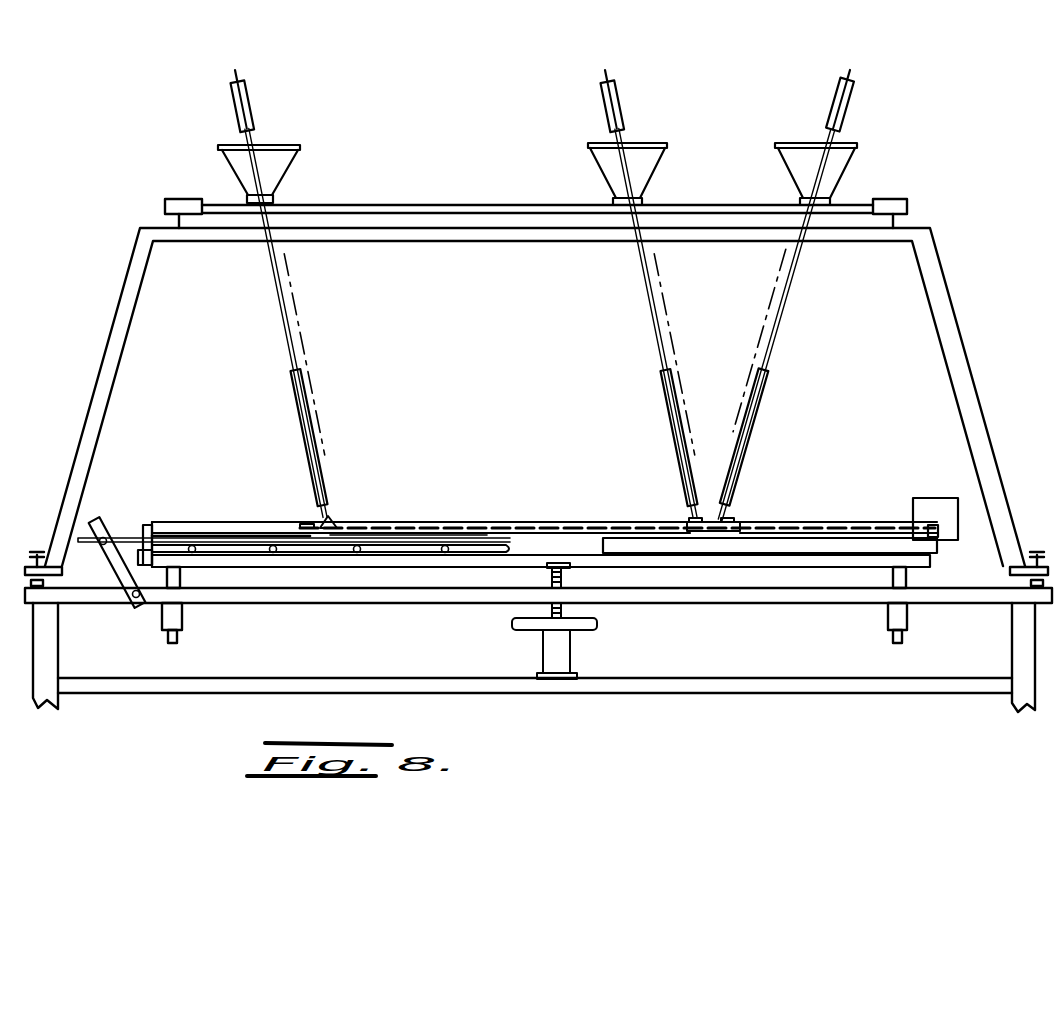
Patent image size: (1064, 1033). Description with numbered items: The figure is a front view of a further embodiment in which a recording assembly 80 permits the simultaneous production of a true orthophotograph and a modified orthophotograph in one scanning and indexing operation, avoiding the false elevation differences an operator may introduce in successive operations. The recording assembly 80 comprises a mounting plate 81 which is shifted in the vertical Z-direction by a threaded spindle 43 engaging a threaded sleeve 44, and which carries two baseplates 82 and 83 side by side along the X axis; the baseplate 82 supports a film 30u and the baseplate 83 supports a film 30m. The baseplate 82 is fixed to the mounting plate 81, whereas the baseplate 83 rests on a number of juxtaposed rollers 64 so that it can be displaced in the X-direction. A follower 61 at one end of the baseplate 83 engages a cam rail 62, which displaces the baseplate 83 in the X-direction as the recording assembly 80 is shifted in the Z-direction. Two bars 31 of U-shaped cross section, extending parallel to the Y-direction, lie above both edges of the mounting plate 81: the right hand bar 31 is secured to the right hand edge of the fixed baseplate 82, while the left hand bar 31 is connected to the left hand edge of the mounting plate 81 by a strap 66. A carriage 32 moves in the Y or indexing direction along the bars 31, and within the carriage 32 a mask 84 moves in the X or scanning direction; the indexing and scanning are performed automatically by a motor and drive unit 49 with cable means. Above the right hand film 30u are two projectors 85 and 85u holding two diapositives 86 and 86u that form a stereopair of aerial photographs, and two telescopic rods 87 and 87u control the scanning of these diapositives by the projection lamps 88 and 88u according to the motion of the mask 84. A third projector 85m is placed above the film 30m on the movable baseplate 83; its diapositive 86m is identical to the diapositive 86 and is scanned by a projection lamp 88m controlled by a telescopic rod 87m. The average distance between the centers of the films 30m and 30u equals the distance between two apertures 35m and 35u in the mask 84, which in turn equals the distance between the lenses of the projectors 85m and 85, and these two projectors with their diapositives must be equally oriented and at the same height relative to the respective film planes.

The film 30m is at (200, 536).
The film 30u is at (815, 532).
The bar 31 is at (170, 522).
The carriage 32 is at (240, 522).
The aperture 35m is at (325, 516).
The aperture 35u is at (722, 520).
The threaded spindle 43 is at (548, 607).
The threaded sleeve 44 is at (548, 660).
The motor and drive unit 49 is at (930, 498).
The follower 61 is at (88, 536).
The cam rail 62 is at (90, 520).
The rollers 64 is at (273, 553).
The strap 66 is at (145, 523).
The recording assembly 80 is at (483, 533).
The mounting plate 81 is at (695, 560).
The baseplate 82 is at (785, 549).
The baseplate 83 is at (332, 549).
The mask 84 is at (455, 524).
The projector 85 is at (655, 171).
The third projector 85m is at (286, 164).
The projector 85u is at (845, 171).
The diapositive 86 is at (646, 144).
The diapositive 86m is at (284, 144).
The diapositive 86u is at (848, 144).
The telescopic rod 87 is at (652, 327).
The telescopic rod 87m is at (292, 351).
The telescopic rod 87u is at (778, 334).
The projection lamp 88 is at (621, 93).
The projection lamp 88m is at (251, 101).
The projection lamp 88u is at (857, 94).